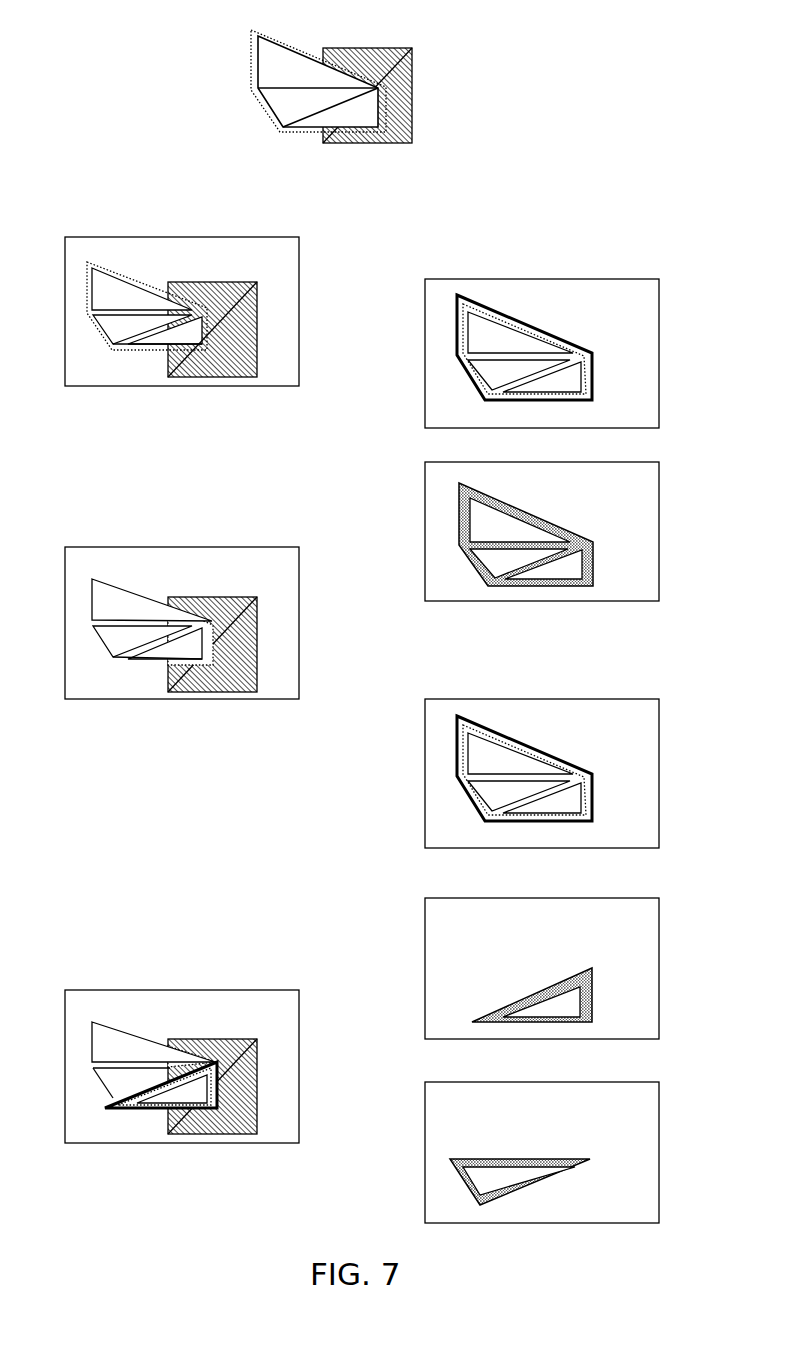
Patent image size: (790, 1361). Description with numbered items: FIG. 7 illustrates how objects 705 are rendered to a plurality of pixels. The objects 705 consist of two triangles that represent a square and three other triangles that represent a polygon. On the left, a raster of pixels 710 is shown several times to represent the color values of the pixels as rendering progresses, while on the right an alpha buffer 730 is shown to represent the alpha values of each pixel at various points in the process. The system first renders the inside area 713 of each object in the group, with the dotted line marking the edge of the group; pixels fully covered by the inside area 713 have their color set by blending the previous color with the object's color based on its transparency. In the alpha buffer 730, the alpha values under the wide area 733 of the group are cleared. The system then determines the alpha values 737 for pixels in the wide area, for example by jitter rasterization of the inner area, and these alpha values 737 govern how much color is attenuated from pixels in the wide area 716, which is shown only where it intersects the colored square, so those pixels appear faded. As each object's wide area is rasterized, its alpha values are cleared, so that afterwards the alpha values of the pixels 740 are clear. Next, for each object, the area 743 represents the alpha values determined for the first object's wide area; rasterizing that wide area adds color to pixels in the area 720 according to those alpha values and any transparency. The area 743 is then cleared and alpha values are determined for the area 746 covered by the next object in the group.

The objects 705 is at (439, 15).
The raster of pixels 710 is at (161, 185).
The inside area 713 is at (127, 298).
The wide area 716 is at (170, 607).
The area 720 is at (210, 1107).
The alpha buffer 730 is at (567, 220).
The wide area 733 is at (537, 332).
The alpha values 737 is at (527, 512).
The alpha values of the pixels 740 is at (512, 738).
The area 743 is at (552, 988).
The area 746 is at (532, 1158).